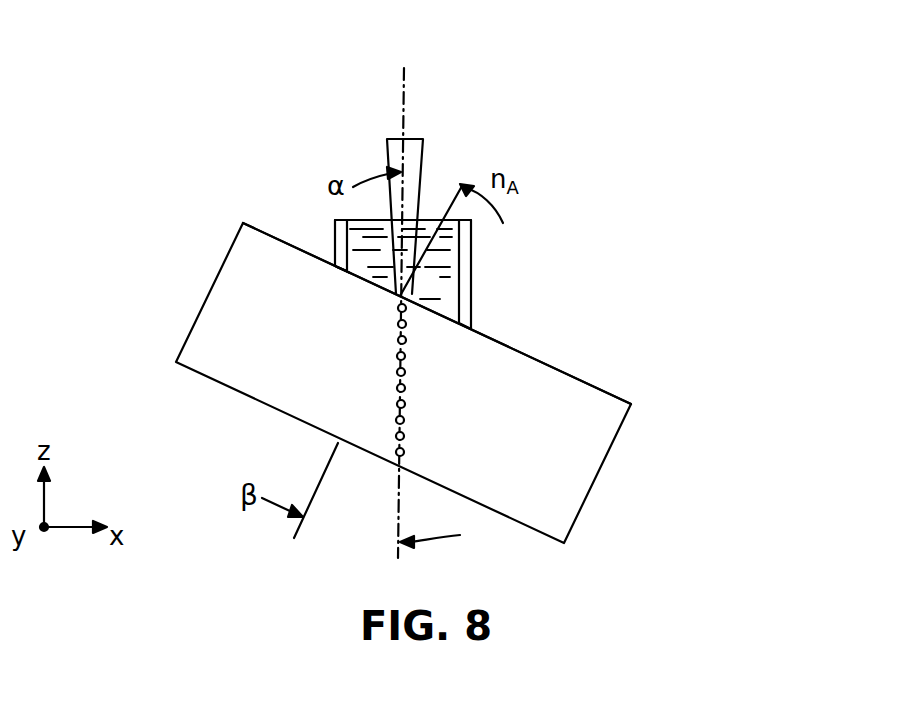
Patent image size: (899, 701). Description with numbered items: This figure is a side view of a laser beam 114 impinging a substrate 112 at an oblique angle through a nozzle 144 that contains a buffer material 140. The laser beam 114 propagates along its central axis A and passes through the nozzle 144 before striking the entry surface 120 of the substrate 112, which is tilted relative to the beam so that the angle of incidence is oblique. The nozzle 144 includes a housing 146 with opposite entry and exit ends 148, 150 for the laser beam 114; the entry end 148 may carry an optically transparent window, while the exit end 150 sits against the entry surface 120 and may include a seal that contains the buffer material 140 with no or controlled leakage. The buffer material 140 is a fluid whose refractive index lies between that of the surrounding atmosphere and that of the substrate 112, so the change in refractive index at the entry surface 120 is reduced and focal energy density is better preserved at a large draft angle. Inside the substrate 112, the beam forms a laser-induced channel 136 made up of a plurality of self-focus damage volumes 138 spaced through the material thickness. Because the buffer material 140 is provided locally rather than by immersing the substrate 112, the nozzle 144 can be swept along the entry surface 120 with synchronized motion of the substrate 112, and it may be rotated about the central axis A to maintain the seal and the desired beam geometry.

The substrate 112 is at (617, 437).
The laser beam 114 is at (423, 158).
The entry surface 120 is at (270, 228).
The laser-induced channel 136 is at (388, 313).
The self-focus damage volume 138 is at (406, 390).
The buffer material 140 is at (418, 229).
The nozzle 144 is at (466, 257).
The housing 146 is at (326, 257).
The entry end 148 is at (332, 220).
The exit end 150 is at (342, 272).
The central axis A is at (405, 110).